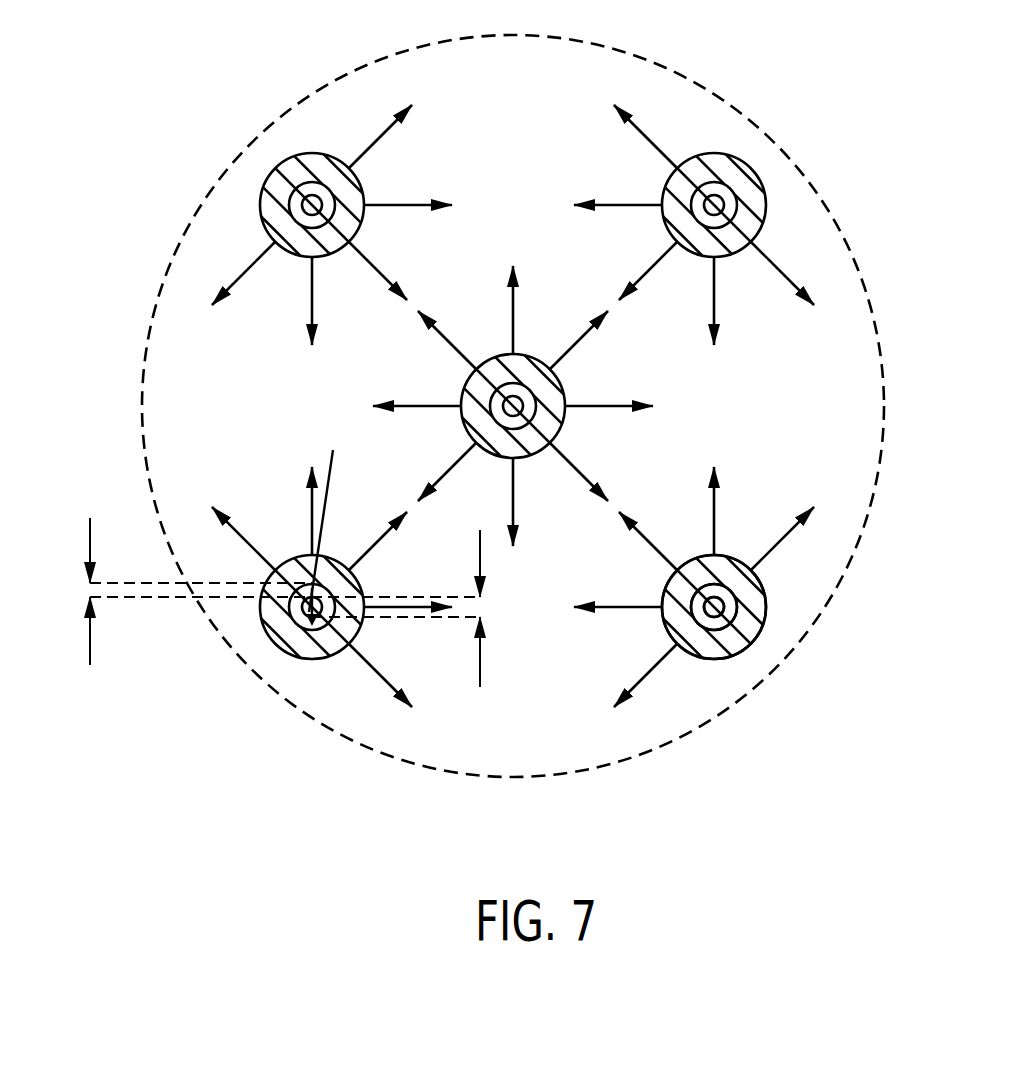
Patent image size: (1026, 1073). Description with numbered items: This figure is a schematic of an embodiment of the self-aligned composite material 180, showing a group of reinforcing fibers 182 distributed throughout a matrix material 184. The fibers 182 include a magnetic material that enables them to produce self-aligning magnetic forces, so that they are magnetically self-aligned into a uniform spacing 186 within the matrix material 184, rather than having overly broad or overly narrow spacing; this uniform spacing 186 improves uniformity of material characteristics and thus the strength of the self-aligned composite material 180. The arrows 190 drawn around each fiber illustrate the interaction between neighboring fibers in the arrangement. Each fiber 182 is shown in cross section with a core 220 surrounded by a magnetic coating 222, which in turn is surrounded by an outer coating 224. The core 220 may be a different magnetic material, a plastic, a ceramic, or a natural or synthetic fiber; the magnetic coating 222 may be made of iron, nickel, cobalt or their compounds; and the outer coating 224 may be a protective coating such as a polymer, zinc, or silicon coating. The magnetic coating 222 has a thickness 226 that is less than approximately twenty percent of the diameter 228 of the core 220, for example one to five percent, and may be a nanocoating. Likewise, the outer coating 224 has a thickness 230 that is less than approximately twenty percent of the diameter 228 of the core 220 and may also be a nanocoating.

The self-aligned composite material 180 is at (678, 72).
The fibers 182 is at (275, 165).
The matrix material 184 is at (560, 63).
The uniform spacing 186 is at (503, 740).
The spray direction arrows 190 is at (375, 142).
The core 220 is at (708, 612).
The magnetic coating 222 is at (760, 627).
The outer coating 224 is at (768, 598).
The thickness of magnetic coating 226 is at (90, 640).
The diameter of core 228 is at (480, 660).
The thickness of outer coating 230 is at (303, 662).